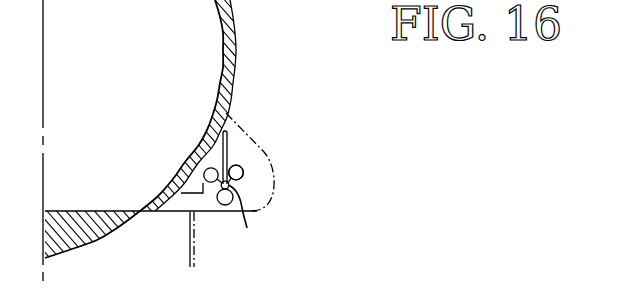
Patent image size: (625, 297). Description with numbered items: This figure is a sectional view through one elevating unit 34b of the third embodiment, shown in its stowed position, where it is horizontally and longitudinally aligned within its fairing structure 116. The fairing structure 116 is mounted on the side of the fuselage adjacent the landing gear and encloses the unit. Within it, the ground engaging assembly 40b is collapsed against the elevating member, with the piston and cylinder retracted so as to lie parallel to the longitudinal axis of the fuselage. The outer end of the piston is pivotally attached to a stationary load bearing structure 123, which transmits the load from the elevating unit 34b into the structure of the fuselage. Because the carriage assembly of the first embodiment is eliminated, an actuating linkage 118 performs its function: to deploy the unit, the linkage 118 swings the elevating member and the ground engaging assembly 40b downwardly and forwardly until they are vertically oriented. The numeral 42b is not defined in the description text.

The fairing structure 116 is at (281, 211).
The actuating linkage 118 is at (229, 135).
The elevating unit 34b is at (253, 182).
The roller 42b is at (247, 168).
The ground engaging assembly 40b is at (255, 221).
The stationary load bearing structure 123 is at (188, 193).